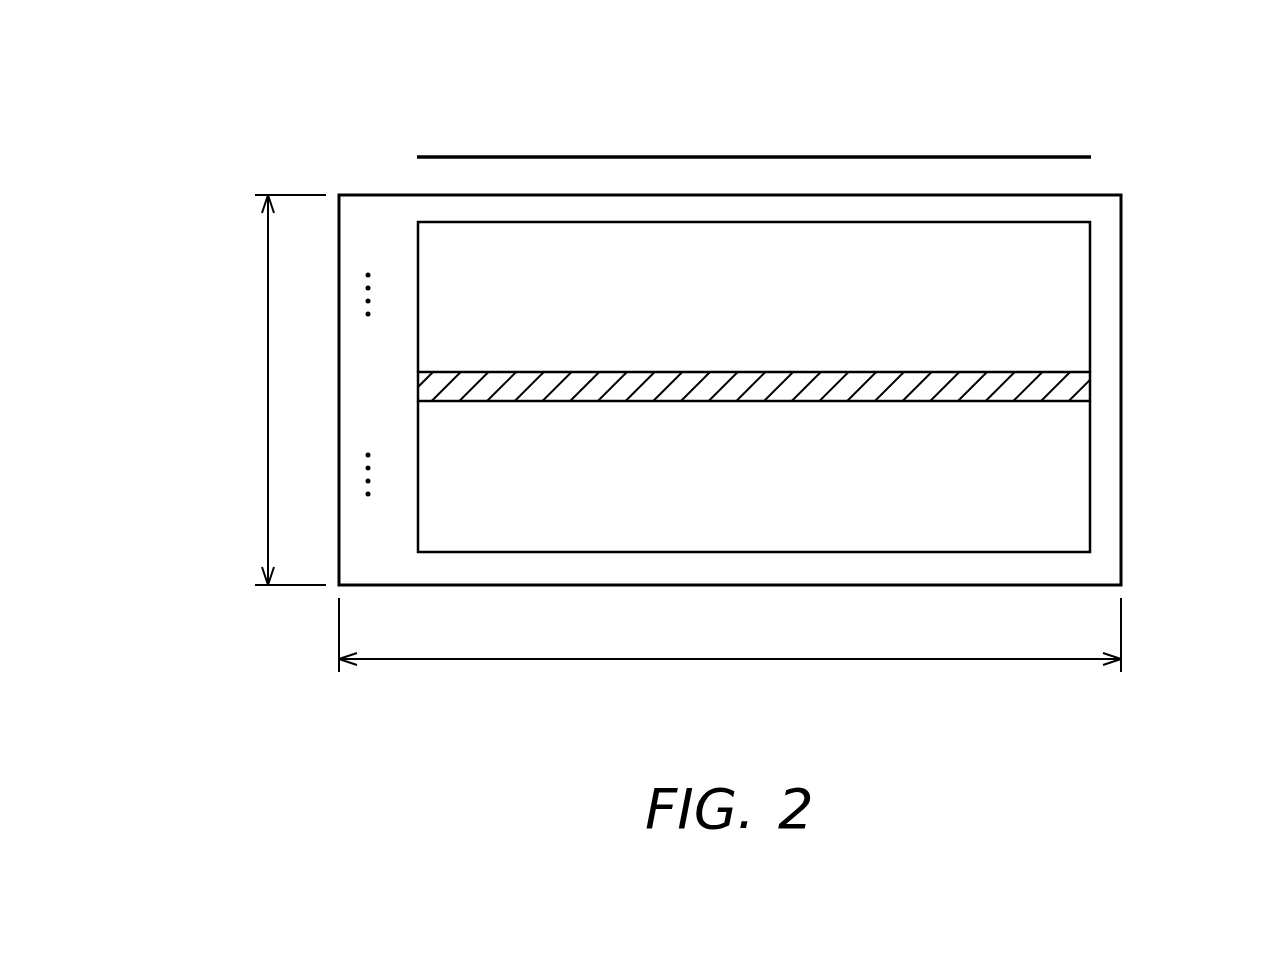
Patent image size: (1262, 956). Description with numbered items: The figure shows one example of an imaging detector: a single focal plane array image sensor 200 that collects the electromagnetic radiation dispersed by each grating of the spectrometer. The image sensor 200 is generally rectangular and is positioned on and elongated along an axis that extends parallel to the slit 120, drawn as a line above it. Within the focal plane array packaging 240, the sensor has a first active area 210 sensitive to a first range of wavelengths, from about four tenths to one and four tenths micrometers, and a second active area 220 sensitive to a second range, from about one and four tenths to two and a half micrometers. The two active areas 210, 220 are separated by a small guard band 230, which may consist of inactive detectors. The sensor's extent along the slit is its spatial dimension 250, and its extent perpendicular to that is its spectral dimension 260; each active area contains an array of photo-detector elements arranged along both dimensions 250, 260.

The focal plane array image sensor 200 is at (292, 100).
The slit 120 is at (930, 155).
The focal plane array packaging 240 is at (1122, 195).
The first active area 210 is at (1090, 290).
The guard band 230 is at (1090, 390).
The second active area 220 is at (1090, 485).
The spatial dimension 250 is at (846, 660).
The spectral dimension 260 is at (268, 378).